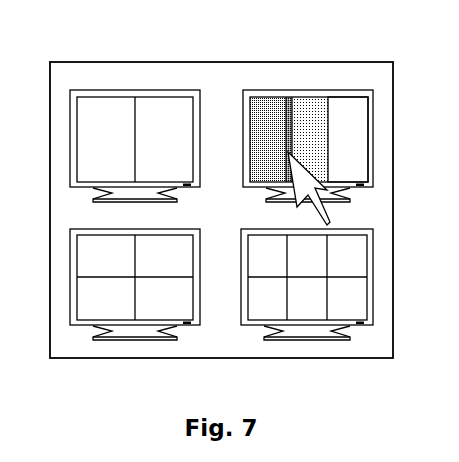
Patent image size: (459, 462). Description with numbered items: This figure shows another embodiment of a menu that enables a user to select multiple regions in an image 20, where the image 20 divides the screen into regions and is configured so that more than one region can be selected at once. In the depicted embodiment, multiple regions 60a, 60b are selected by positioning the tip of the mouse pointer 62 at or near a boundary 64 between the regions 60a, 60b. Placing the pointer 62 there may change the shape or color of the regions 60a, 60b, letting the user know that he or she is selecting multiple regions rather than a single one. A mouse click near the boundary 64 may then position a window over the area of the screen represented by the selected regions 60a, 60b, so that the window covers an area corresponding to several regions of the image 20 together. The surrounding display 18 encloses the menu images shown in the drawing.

The display screen 18 is at (221, 76).
The image 20 is at (351, 95).
The region 60a is at (263, 103).
The region 60b is at (307, 105).
The mouse pointer 62 is at (280, 163).
The boundary 64 is at (291, 100).